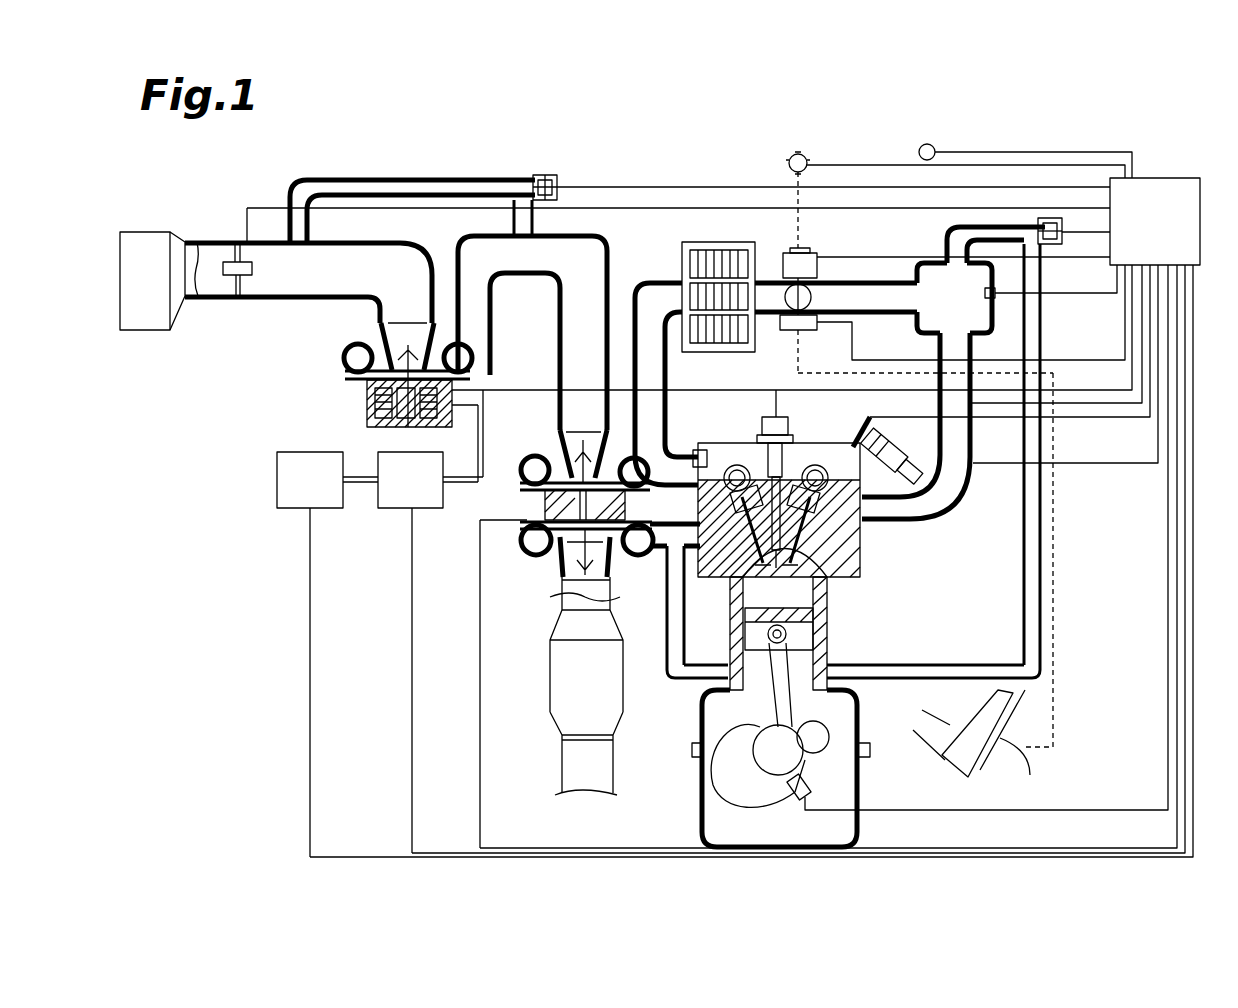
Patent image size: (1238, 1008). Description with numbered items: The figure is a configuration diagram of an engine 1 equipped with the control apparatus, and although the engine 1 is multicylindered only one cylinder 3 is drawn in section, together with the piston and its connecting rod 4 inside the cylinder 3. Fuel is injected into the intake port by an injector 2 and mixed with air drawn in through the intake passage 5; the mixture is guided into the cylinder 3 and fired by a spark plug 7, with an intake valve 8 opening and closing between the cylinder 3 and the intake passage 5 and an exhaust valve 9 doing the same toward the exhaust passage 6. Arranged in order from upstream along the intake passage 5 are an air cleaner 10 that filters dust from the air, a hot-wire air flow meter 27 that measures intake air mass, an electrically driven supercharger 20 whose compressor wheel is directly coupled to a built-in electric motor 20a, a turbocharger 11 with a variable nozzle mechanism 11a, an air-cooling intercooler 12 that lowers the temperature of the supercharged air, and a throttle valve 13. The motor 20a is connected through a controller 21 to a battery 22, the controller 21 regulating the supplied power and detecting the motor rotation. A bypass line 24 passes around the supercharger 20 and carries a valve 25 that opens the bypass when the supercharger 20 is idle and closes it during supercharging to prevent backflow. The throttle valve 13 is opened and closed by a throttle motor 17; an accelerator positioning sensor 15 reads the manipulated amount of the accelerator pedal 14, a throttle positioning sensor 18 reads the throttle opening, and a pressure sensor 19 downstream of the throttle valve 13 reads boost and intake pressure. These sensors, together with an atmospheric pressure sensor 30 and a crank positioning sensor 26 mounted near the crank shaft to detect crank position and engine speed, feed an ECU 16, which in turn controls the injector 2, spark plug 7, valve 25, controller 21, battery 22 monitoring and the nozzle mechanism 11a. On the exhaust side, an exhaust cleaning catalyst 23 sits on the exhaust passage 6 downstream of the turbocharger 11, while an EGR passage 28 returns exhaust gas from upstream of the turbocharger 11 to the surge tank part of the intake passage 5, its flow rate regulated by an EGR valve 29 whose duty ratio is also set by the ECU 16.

The engine 1 is at (928, 556).
The injector 2 is at (895, 468).
The cylinder 3 is at (752, 598).
The connecting rod 4 is at (803, 636).
The intake passage 5 is at (955, 489).
The exhaust passage 6 is at (662, 523).
The spark plug 7 is at (822, 622).
The intake valve 8 is at (820, 562).
The exhaust valve 9 is at (722, 558).
The air cleaner 10 is at (148, 326).
The turbocharger 11 is at (516, 446).
The variable nozzle mechanism 11a is at (540, 513).
The intercooler 12 is at (722, 340).
The throttle valve 13 is at (790, 290).
The accelerator pedal 14 is at (986, 768).
The accelerator positioning sensor 15 is at (800, 330).
The ECU 16 is at (1176, 190).
The throttle motor 17 is at (805, 258).
The throttle positioning sensor 18 is at (787, 160).
The pressure sensor 19 is at (993, 298).
The supercharger 20 is at (345, 399).
The electric motor 20a is at (367, 418).
The controller 21 is at (405, 508).
The battery 22 is at (290, 508).
The exhaust cleaning catalyst 23 is at (566, 690).
The bypass line 24 is at (417, 179).
The valve 25 is at (537, 174).
The crank positioning sensor 26 is at (808, 780).
The air flow meter 27 is at (241, 261).
The EGR passage 28 is at (1042, 504).
The EGR valve 29 is at (1064, 230).
The atmospheric pressure sensor 30 is at (919, 152).